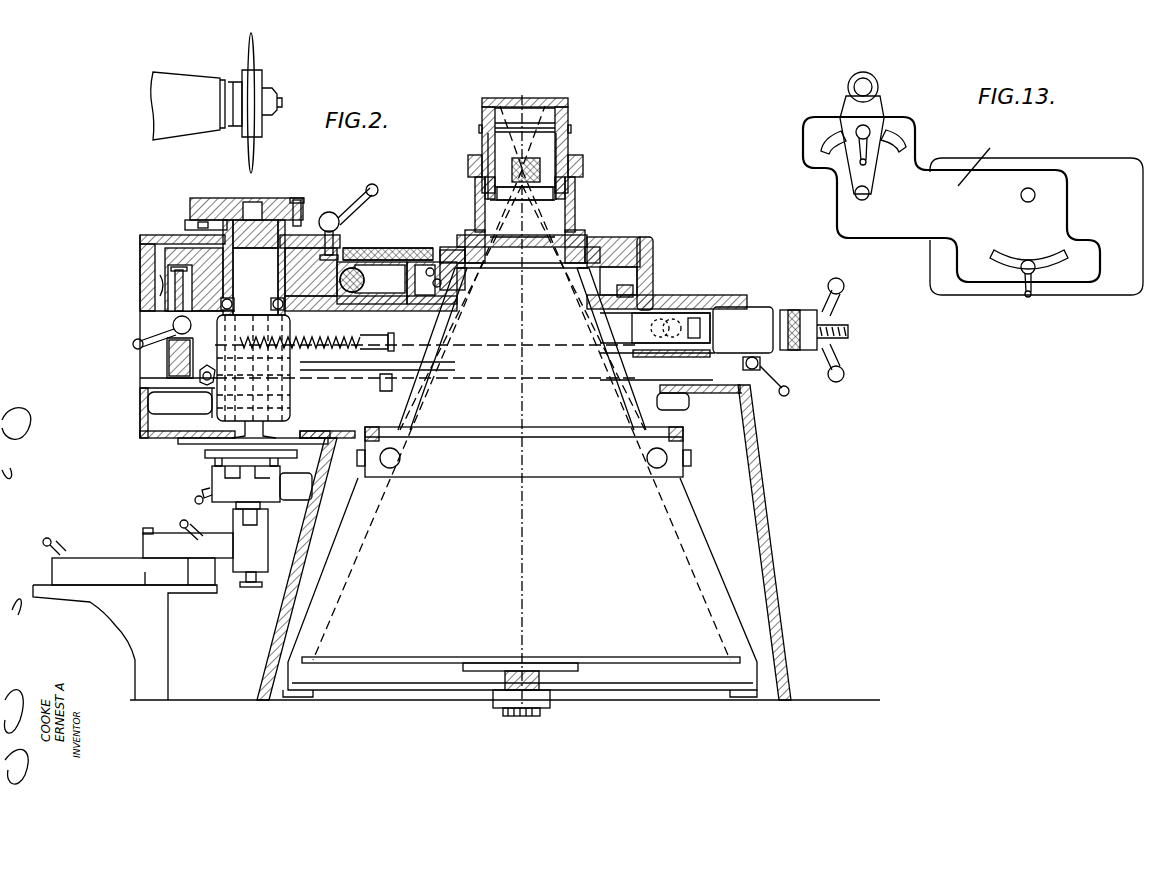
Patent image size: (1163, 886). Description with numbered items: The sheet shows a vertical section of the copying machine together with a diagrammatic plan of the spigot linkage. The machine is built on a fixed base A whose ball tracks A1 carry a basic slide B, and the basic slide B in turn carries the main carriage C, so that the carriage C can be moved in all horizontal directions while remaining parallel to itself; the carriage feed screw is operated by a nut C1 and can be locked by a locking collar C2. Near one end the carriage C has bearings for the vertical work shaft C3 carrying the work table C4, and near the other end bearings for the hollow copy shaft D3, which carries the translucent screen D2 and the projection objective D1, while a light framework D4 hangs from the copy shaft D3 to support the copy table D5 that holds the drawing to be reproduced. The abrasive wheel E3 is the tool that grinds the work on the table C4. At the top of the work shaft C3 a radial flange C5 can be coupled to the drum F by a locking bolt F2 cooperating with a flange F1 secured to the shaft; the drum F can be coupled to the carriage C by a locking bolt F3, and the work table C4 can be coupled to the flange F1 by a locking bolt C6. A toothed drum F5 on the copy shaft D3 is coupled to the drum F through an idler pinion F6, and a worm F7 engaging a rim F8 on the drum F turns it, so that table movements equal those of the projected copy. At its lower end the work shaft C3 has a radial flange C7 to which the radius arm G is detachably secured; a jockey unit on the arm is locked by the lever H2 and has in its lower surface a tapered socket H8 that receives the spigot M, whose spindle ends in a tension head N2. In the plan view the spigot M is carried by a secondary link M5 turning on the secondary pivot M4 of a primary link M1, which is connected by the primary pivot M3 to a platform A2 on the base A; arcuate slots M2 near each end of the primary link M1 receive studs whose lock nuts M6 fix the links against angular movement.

In FIG. 2, the abrasive wheel E3 is at (255, 55).
In FIG. 2, the work table C4 is at (243, 198).
In FIG. 2, the radial flange C5 is at (188, 219).
In FIG. 2, the locking bolt C6 is at (298, 198).
In FIG. 2, the main carriage C is at (140, 298).
In FIG. 2, the flange F1 is at (165, 252).
In FIG. 2, the rim F8 is at (160, 281).
In FIG. 2, the idler pinion F6 is at (425, 248).
In FIG. 2, the worm F7 is at (360, 262).
In FIG. 2, the toothed drum F5 is at (452, 250).
In FIG. 2, the drum F is at (318, 225).
In FIG. 2, the locking bolt F3 is at (385, 191).
In FIG. 2, the locking bolt F2 is at (134, 345).
In FIG. 2, the basic slide B is at (167, 358).
In FIG. 2, the work shaft C3 is at (245, 436).
In FIG. 2, the radial flange C7 is at (178, 441).
In FIG. 2, the radius arm G is at (265, 458).
In FIG. 2, the lever H2 is at (210, 491).
In FIG. 2, the tapered socket H8 is at (268, 504).
In FIG. 2, the spigot M is at (270, 540).
In FIG. 13, the spigot M is at (868, 89).
In FIG. 2, the secondary pivot M4 is at (147, 533).
In FIG. 13, the secondary pivot M4 is at (856, 196).
In FIG. 2, the lock nuts M6 is at (62, 527).
In FIG. 13, the lock nuts M6 is at (858, 130).
In FIG. 2, the primary link M1 is at (107, 565).
In FIG. 13, the primary link M1 is at (985, 155).
In FIG. 2, the primary pivot M3 is at (148, 580).
In FIG. 13, the primary pivot M3 is at (1031, 189).
In FIG. 2, the secondary link M5 is at (193, 560).
In FIG. 13, the secondary link M5 is at (858, 107).
In FIG. 2, the tension head N2 is at (250, 587).
In FIG. 2, the platform A2 is at (145, 663).
In FIG. 13, the platform A2 is at (951, 288).
In FIG. 2, the translucent screen D2 is at (540, 100).
In FIG. 2, the projection objective D1 is at (545, 168).
In FIG. 2, the copy shaft D3 is at (607, 262).
In FIG. 2, the locking collar C2 is at (758, 325).
In FIG. 2, the nut C1 is at (820, 322).
In FIG. 2, the ball tracks A1 is at (745, 395).
In FIG. 2, the light framework D4 is at (722, 547).
In FIG. 2, the copy table D5 is at (662, 660).
In FIG. 2, the fixed base A is at (786, 678).
In FIG. 13, the arcuate slot M2 is at (904, 140).